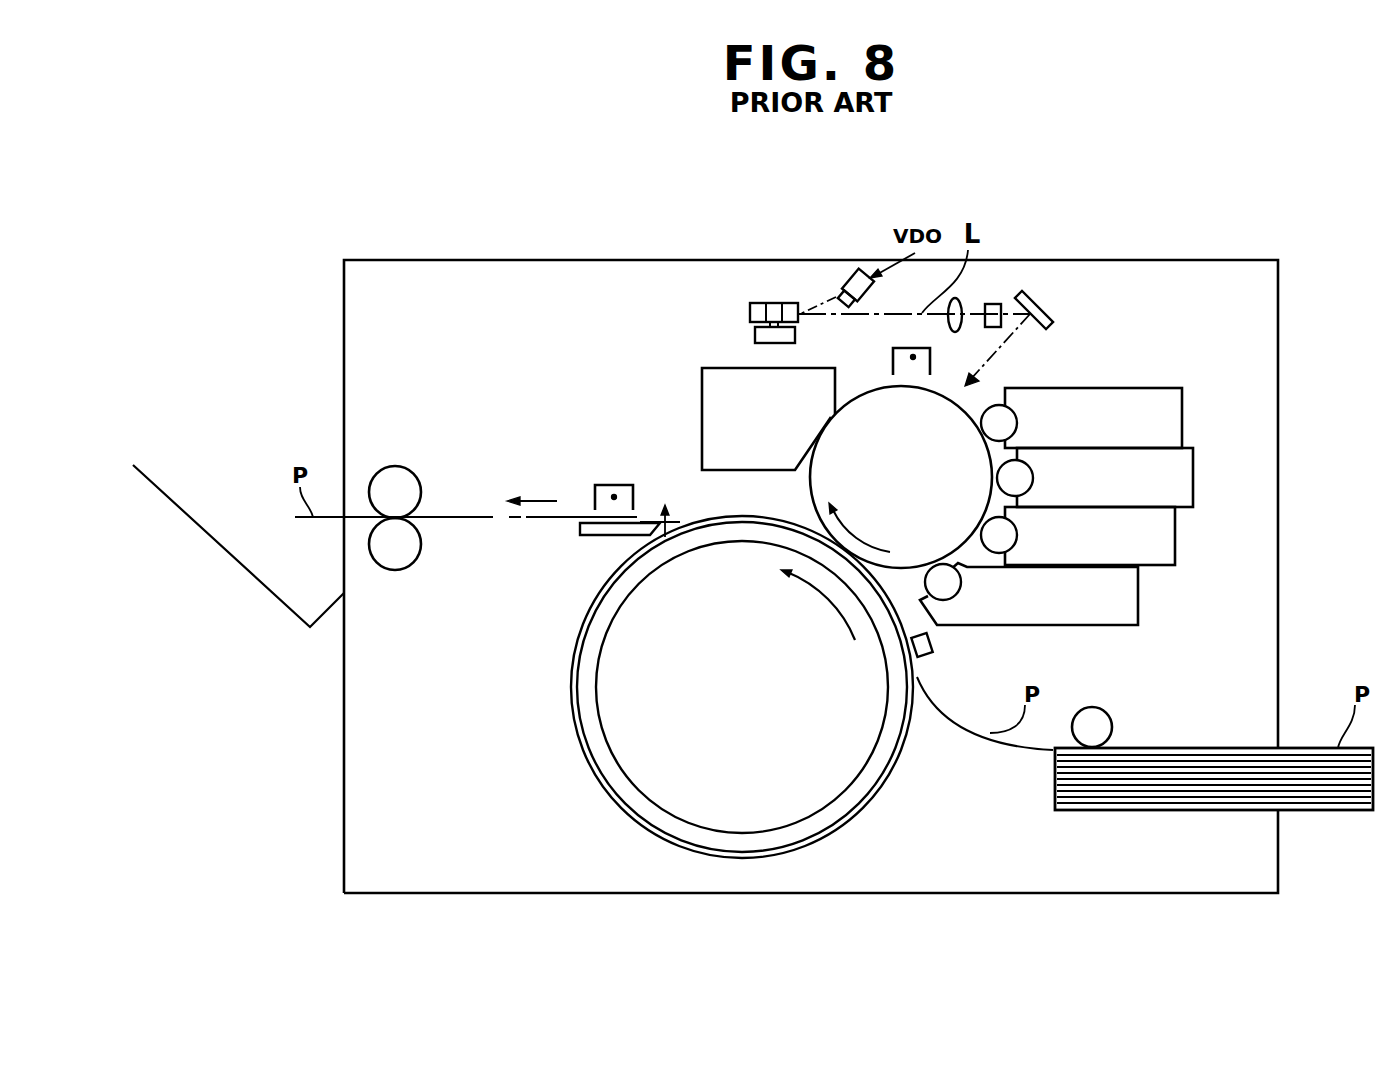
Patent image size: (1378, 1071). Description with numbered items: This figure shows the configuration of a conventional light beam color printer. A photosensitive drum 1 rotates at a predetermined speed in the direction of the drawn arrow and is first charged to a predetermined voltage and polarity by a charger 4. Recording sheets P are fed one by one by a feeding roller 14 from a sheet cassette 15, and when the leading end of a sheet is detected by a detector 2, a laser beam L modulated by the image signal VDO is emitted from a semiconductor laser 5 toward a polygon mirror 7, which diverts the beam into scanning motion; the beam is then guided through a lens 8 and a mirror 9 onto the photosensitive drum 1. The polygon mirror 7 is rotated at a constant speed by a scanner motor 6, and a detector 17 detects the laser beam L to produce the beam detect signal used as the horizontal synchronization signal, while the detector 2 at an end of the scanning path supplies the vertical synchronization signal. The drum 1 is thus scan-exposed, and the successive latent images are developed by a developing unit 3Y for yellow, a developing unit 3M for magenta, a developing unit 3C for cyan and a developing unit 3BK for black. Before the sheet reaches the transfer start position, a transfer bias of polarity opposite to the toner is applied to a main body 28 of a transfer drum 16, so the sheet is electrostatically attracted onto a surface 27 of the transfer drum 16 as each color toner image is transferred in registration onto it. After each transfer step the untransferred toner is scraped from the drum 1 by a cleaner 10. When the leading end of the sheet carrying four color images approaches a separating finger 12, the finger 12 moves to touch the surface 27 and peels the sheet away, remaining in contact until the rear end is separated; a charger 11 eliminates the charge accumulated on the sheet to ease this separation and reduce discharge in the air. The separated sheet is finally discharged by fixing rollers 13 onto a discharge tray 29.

The photosensitive drum 1 is at (972, 398).
The detector 2 is at (932, 645).
The developing unit 3Y is at (1183, 410).
The developing unit 3M is at (1193, 466).
The developing unit 3C is at (1175, 530).
The developing unit 3BK is at (1138, 583).
The charger 4 is at (893, 352).
The semiconductor laser 5 is at (848, 270).
The scanner motor 6 is at (755, 334).
The polygon mirror 7 is at (750, 310).
The lens 8 is at (960, 296).
The mirror 9 is at (1050, 310).
The cleaner 10 is at (702, 410).
The charger 11 is at (613, 485).
The separating finger 12 is at (600, 535).
The fixing rollers 13 is at (421, 492).
The feeding roller 14 is at (1112, 723).
The sheet cassette 15 is at (1193, 810).
The transfer drum 16 is at (497, 748).
The detector 17 is at (994, 303).
The surface 27 is at (583, 748).
The main body 28 is at (611, 782).
The discharge tray 29 is at (247, 568).